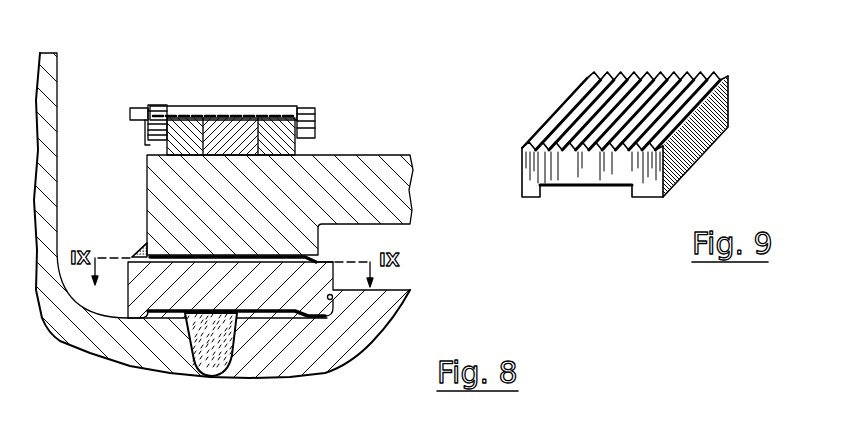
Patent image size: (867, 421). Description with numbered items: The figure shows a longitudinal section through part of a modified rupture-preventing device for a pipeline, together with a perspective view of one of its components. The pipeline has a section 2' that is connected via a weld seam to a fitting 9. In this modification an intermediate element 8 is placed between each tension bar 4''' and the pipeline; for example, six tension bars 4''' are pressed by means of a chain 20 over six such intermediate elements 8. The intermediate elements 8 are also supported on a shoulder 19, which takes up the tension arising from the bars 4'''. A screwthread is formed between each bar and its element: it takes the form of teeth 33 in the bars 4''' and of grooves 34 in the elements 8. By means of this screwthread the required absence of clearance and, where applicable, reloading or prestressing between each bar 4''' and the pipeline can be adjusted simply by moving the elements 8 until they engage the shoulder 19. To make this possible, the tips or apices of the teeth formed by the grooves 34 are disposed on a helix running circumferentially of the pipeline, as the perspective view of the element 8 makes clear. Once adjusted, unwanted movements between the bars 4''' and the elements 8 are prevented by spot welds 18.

In FIG. 8, the fitting 9 is at (73, 325).
In FIG. 8, the pipeline section 2' is at (270, 210).
In FIG. 8, the shoulder 19 is at (334, 300).
In FIG. 8, the tension bar 4''' is at (280, 210).
In FIG. 8, the intermediate element 8 is at (312, 263).
In FIG. 9, the intermediate element 8 is at (557, 104).
In FIG. 8, the teeth 33 is at (143, 230).
In FIG. 8, the spot welds 18 is at (138, 243).
In FIG. 8, the chain 20 is at (212, 105).
In FIG. 9, the grooves 34 is at (615, 152).